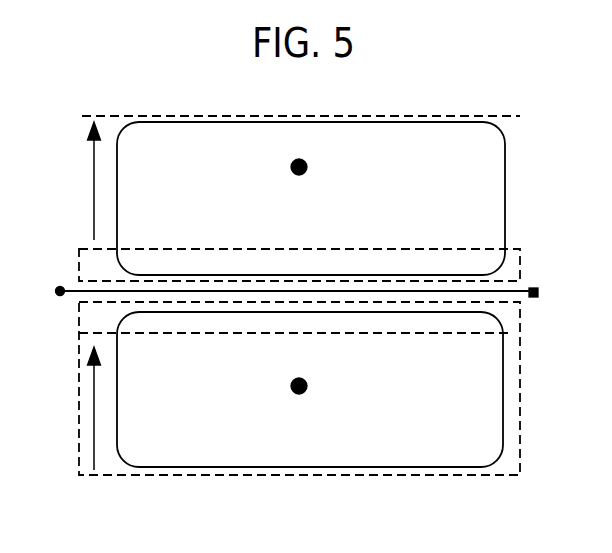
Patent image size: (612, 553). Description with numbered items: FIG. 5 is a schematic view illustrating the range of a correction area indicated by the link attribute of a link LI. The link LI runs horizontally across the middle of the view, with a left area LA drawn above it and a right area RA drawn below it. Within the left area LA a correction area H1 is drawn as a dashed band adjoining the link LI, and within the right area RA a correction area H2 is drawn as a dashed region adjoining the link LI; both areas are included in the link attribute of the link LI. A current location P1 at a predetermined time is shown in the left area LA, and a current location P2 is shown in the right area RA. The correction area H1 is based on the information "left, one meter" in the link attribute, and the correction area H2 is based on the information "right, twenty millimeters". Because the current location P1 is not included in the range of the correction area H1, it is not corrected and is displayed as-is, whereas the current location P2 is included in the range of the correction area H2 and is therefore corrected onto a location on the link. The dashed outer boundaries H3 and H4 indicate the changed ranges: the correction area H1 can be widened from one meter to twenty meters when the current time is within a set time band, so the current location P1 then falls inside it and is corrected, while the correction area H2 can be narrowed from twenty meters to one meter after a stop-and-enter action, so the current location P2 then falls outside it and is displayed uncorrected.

The third height position (upper dashed boundary line) H3 is at (506, 118).
The left area LA is at (503, 168).
The correction area H1 is at (520, 262).
The link LI is at (67, 290).
The fourth height position (dashed line) H4 is at (493, 305).
The correction area H2 is at (520, 363).
The right area RA is at (365, 468).
The current location P1 is at (292, 164).
The current location P2 is at (292, 383).